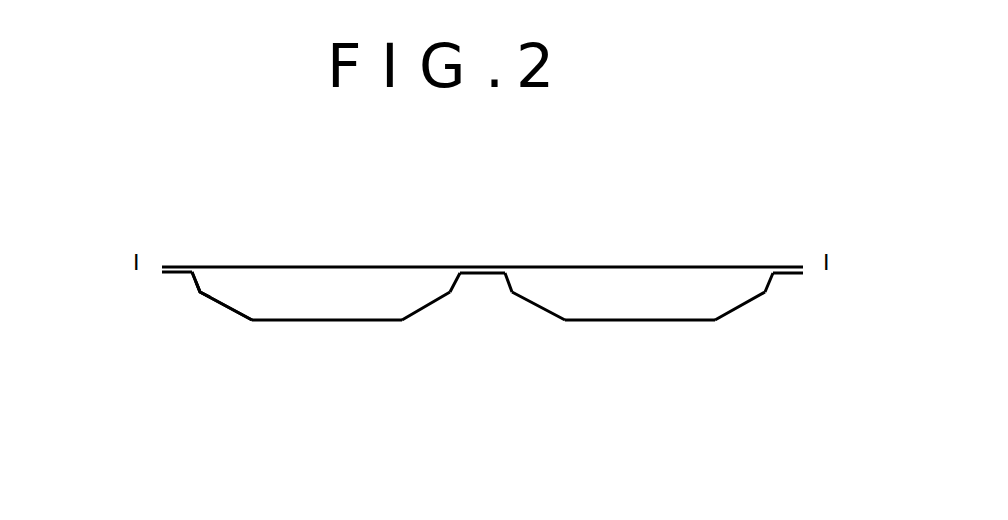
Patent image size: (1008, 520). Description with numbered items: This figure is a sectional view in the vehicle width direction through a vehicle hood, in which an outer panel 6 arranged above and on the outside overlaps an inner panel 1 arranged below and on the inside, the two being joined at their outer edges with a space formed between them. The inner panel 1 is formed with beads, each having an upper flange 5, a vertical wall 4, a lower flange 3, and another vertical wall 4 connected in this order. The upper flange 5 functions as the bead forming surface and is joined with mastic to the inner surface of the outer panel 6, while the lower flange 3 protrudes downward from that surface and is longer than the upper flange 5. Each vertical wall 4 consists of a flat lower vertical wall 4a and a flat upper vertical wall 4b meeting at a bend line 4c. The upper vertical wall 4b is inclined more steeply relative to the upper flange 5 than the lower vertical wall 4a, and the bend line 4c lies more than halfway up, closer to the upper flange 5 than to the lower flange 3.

The inner panel 1 is at (437, 311).
The lower flange 3 is at (327, 322).
The vertical wall 4 is at (203, 300).
The lower vertical wall 4a is at (235, 310).
The upper vertical wall 4b is at (198, 283).
The bend line 4c is at (198, 293).
The upper flange 5 is at (178, 274).
The outer panel 6 is at (396, 267).